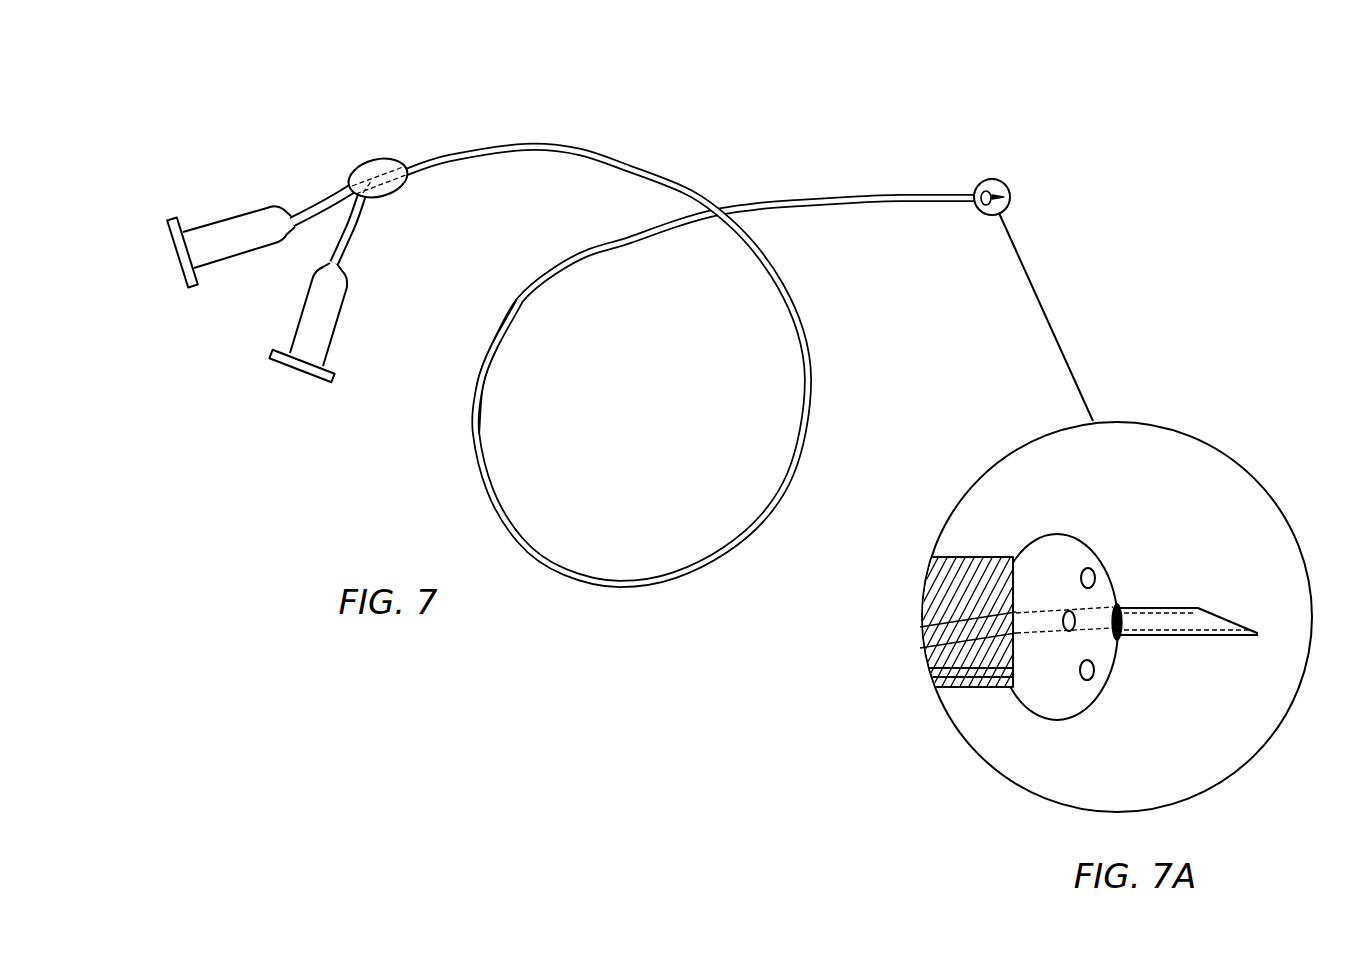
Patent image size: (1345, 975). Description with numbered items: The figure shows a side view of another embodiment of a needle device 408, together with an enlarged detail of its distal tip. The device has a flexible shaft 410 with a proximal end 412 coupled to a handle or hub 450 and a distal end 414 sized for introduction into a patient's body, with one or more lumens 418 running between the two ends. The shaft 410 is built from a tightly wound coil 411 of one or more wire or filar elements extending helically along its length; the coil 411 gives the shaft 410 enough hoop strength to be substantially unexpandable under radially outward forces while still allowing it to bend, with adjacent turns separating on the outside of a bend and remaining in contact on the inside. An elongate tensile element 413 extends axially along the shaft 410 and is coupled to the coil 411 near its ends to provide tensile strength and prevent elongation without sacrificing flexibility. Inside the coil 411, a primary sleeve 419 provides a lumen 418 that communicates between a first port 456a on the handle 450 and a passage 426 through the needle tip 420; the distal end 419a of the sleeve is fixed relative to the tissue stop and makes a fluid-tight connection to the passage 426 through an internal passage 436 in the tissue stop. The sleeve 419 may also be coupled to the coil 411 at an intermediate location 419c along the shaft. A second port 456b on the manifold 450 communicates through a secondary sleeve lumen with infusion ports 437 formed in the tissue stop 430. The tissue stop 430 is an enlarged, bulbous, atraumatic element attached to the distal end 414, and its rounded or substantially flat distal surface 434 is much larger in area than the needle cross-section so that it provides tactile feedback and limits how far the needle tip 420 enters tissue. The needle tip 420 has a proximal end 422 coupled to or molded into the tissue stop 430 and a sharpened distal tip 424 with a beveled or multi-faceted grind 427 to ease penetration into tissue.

In FIG. 7, the needle device 408 is at (559, 120).
In FIG. 7, the shaft 410 is at (691, 171).
In FIG. 7A, the shaft 410 is at (964, 536).
In FIG. 7A, the coil 411 is at (935, 593).
In FIG. 7, the proximal end 412 is at (413, 160).
In FIG. 7A, the tensile element 413 is at (937, 680).
In FIG. 7, the distal end 414 is at (907, 204).
In FIG. 7A, the distal end 414 is at (977, 683).
In FIG. 7A, the lumen 418 is at (927, 638).
In FIG. 7A, the primary sleeve 419 is at (985, 645).
In FIG. 7A, the distal end of primary sleeve 419a is at (1000, 585).
In FIG. 7, the intermediate coupling location 419c is at (640, 592).
In FIG. 7, the needle tip 420 is at (1001, 181).
In FIG. 7A, the needle tip 420 is at (1184, 651).
In FIG. 7A, the proximal end of needle tip 422 is at (1133, 638).
In FIG. 7A, the distal tip 424 is at (1247, 637).
In FIG. 7A, the passage 426 is at (1187, 610).
In FIG. 7A, the bevel 427 is at (1228, 618).
In FIG. 7, the tissue stop 430 is at (987, 211).
In FIG. 7A, the tissue stop 430 is at (1124, 548).
In FIG. 7A, the distal surface 434 is at (1113, 583).
In FIG. 7A, the internal passage 436 is at (1050, 608).
In FIG. 7A, the infusion ports 437 is at (1082, 687).
In FIG. 7, the handle 450 is at (354, 151).
In FIG. 7, the first port 456a is at (213, 222).
In FIG. 7, the second port 456b is at (340, 333).